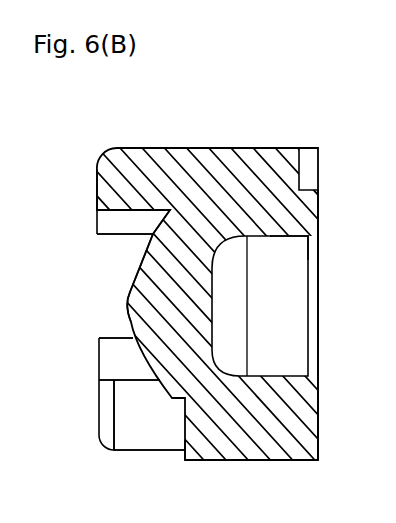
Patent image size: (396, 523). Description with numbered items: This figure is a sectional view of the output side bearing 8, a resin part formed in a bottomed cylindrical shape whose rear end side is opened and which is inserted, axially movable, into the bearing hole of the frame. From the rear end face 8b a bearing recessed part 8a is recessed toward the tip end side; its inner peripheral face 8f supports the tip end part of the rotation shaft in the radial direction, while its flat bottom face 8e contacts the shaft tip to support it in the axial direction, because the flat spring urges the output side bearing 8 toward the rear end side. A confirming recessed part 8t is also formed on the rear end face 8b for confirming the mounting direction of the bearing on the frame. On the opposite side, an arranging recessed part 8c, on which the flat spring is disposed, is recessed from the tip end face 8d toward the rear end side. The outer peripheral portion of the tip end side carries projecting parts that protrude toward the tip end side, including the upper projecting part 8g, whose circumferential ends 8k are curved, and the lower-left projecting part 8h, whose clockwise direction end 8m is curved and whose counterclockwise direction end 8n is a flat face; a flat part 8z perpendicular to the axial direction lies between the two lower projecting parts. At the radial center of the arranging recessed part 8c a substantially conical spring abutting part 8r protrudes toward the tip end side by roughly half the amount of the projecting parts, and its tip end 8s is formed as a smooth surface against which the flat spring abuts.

The output side bearing 8 is at (233, 148).
The projecting part 8g is at (150, 148).
The confirming recessed part 8t is at (308, 157).
The tip end face 8d is at (97, 185).
The both ends of the projecting part 8k is at (117, 242).
The arranging recessed part 8c is at (120, 264).
The spring abutting part 8r is at (130, 276).
The tip end of the spring abutting part 8s is at (127, 302).
The clockwise direction end 8m is at (122, 334).
The counterclockwise direction end 8n is at (157, 428).
The projecting part 8h is at (145, 452).
The flat part 8z is at (185, 452).
The inner peripheral face 8f is at (288, 301).
The bottom face 8e is at (215, 341).
The bearing recessed part 8a is at (283, 238).
The rear end face 8b is at (317, 427).